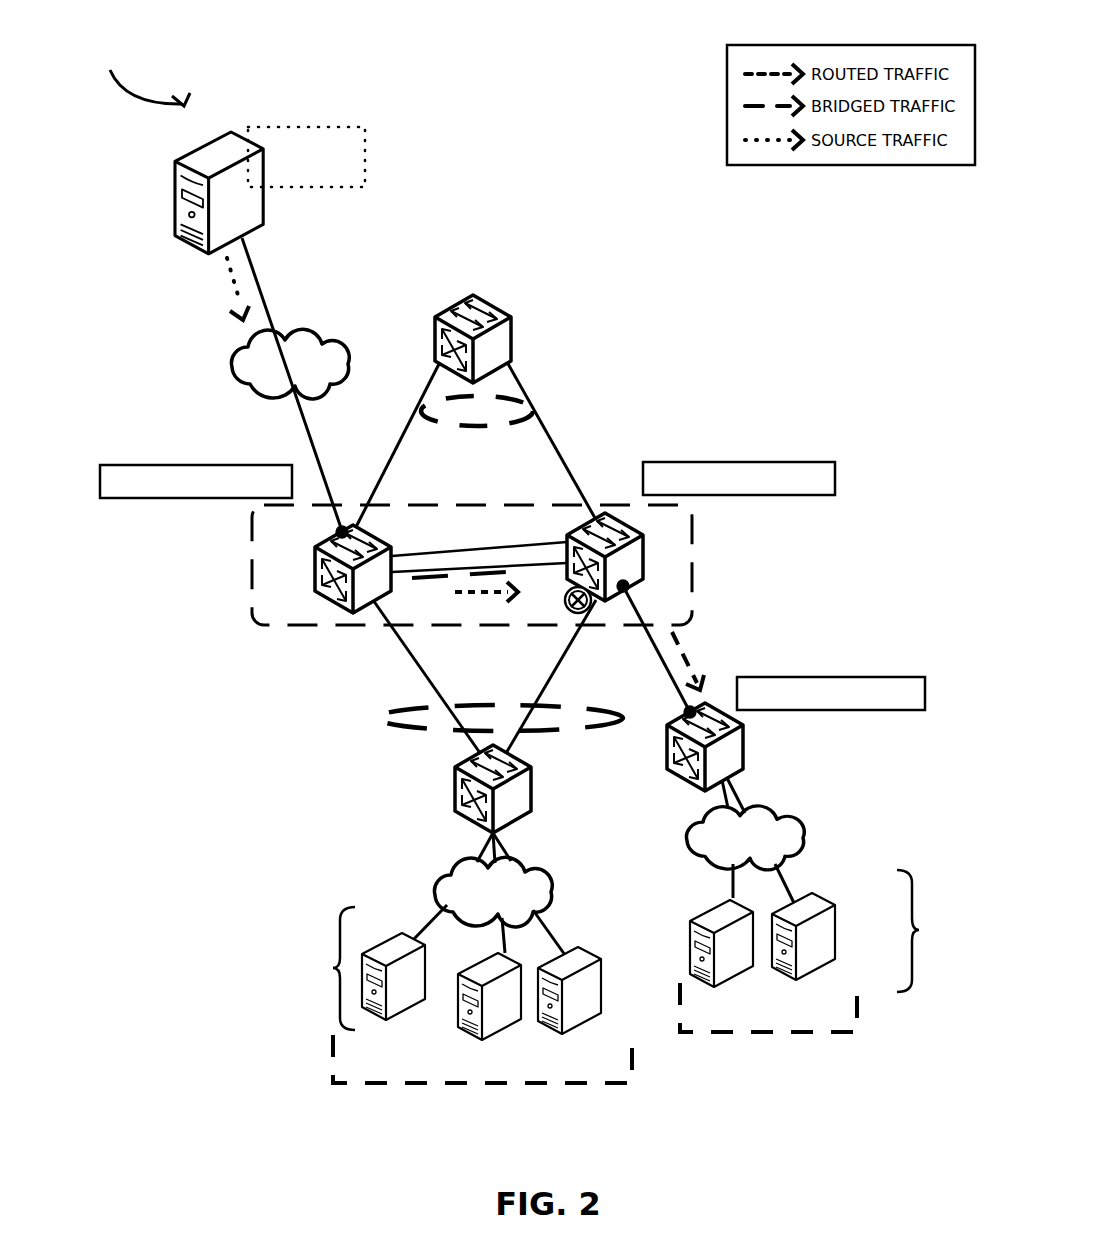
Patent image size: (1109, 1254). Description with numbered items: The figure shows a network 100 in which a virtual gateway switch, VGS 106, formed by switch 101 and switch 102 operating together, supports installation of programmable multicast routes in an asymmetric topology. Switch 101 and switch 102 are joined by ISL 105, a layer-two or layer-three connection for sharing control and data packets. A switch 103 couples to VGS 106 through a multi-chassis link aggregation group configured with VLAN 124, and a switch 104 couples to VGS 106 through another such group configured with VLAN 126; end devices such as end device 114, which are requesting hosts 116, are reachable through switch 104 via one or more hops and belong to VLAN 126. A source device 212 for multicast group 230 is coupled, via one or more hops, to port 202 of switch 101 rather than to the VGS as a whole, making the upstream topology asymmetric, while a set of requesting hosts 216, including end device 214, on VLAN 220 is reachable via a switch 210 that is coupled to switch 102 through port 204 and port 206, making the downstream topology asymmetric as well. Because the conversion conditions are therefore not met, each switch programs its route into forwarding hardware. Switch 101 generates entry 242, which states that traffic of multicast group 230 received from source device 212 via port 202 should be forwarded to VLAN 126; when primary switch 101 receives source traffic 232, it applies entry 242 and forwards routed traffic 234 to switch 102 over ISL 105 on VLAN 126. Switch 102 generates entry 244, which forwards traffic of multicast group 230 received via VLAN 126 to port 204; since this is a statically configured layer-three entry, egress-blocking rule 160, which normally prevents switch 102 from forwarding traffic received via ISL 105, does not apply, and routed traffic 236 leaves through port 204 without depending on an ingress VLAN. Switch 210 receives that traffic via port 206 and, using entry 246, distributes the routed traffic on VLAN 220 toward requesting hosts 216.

The network 100 is at (128, 61).
The source device 212 is at (175, 192).
The multicast group 230 is at (306, 157).
The source traffic 232 is at (232, 282).
The switch 103 is at (510, 330).
The VLAN 124 is at (423, 415).
The entry 242 is at (197, 498).
The entry 244 is at (738, 462).
The entry 246 is at (833, 677).
The virtual gateway switch (VGS) 106 is at (285, 626).
The switch 101 is at (318, 564).
The port 202 is at (338, 531).
The switch 102 is at (643, 562).
The inter-switch link (ISL) 105 is at (550, 563).
The routed traffic 234 is at (490, 598).
The port 204 is at (629, 588).
The egress-blocking rule 160 is at (582, 613).
The routed traffic 236 is at (683, 652).
The VLAN 126 is at (382, 718).
The switch 104 is at (532, 796).
The requesting hosts 116 is at (469, 973).
The end device 114 is at (602, 983).
The switch 210 is at (742, 754).
The port 206 is at (686, 708).
The requesting hosts 216 is at (838, 931).
The end device 214 is at (833, 930).
The VLAN 220 is at (793, 1033).